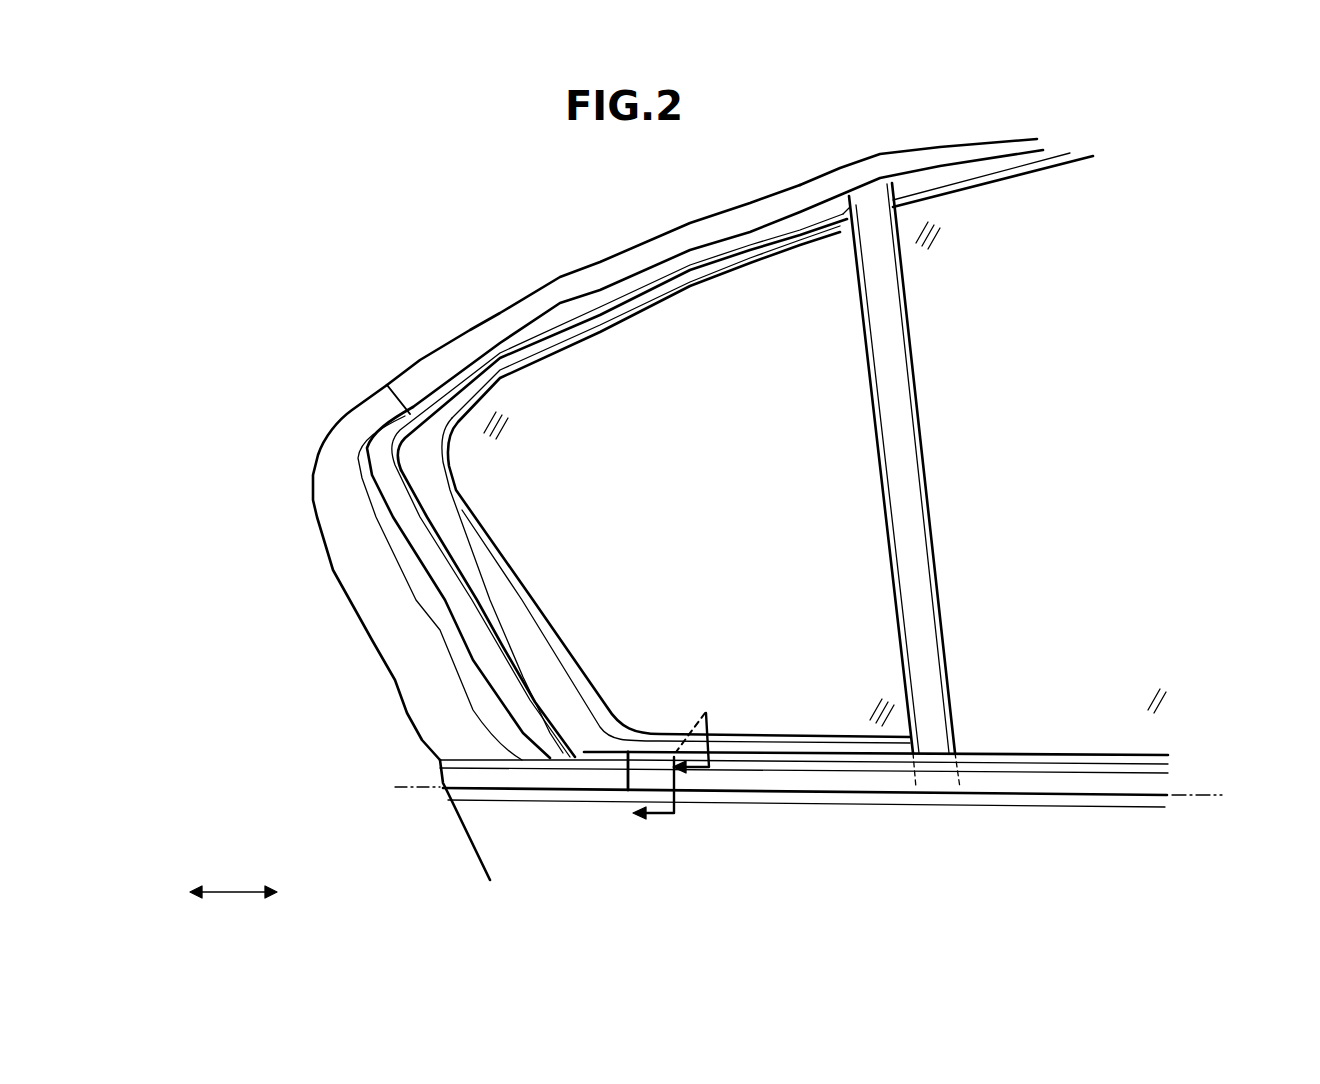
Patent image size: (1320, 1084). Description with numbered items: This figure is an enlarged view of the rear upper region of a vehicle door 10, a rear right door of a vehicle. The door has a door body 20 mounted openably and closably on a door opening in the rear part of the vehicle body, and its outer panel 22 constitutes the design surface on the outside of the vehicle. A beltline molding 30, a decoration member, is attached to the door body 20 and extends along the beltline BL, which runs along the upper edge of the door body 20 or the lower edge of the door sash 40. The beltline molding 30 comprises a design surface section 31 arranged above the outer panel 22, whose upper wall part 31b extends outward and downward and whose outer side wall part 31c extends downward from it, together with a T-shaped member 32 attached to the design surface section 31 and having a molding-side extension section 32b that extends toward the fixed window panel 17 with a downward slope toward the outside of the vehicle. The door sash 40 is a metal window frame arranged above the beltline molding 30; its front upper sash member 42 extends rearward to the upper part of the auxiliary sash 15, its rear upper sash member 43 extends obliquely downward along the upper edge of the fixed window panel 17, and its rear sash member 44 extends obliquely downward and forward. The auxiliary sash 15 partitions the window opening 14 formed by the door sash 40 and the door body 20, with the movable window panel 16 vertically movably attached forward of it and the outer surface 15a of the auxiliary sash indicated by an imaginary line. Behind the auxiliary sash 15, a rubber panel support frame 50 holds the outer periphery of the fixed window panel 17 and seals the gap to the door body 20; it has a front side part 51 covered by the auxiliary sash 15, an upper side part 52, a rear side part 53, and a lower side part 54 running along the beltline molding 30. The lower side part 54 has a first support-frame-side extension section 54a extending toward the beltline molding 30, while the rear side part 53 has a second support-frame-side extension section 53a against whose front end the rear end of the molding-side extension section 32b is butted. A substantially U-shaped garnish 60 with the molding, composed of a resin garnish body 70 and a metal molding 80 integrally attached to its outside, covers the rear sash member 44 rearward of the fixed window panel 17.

The vehicle door 10 is at (255, 213).
The window opening 14 is at (1105, 539).
The auxiliary sash 15 is at (867, 220).
The outer surface of the auxiliary sash 15a is at (932, 702).
The movable window panel 16 is at (1068, 221).
The fixed window panel 17 is at (662, 355).
The door body 20 is at (479, 858).
The outer panel 22 is at (853, 862).
The beltline molding 30 is at (1062, 795).
The design surface section 31 is at (1113, 785).
The upper wall part 31b is at (1030, 767).
The outer side wall part 31c is at (755, 782).
The T-shaped member 32 is at (1152, 755).
The molding-side extension section 32b is at (902, 755).
The door sash 40 is at (560, 265).
The front upper sash member 42 is at (950, 137).
The rear upper sash member 43 is at (753, 195).
The rear sash member 44 is at (357, 620).
The panel support frame 50 is at (562, 352).
The front side part 51 is at (913, 383).
The upper side part 52 is at (836, 233).
The rear side part 53 is at (495, 548).
The second support-frame-side extension section 53a is at (612, 750).
The lower side part 54 is at (823, 733).
The first support-frame-side extension section 54a is at (747, 745).
The garnish with the molding 60 is at (236, 677).
The garnish body 70 is at (529, 673).
The molding 80 is at (407, 715).
The beltline BL is at (1215, 797).